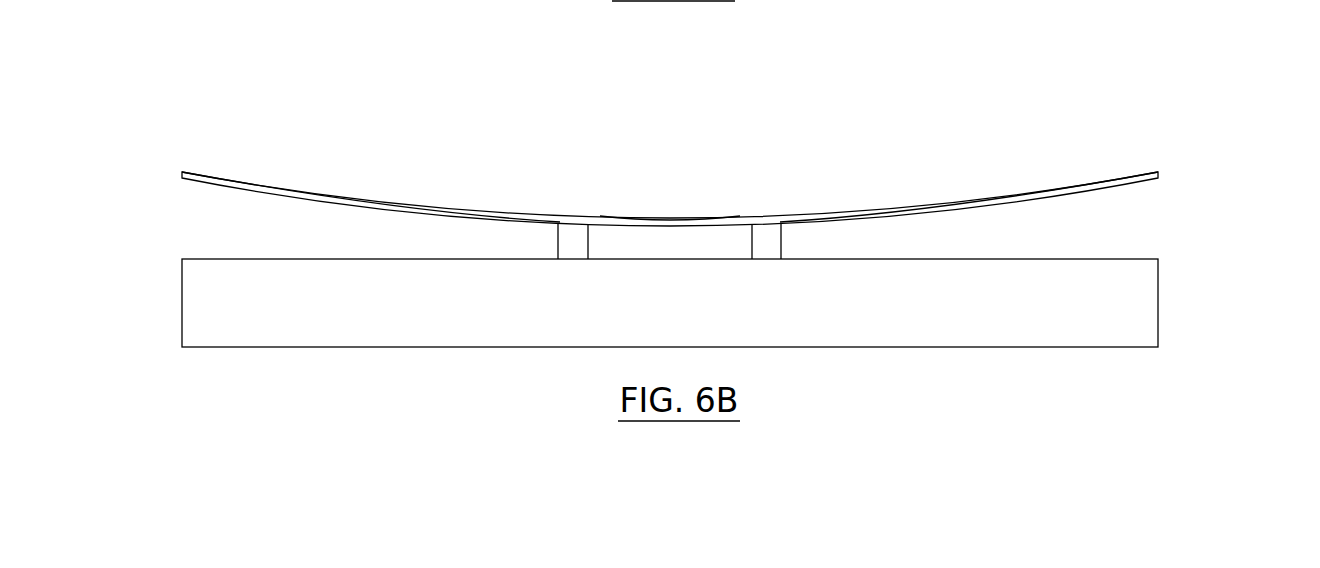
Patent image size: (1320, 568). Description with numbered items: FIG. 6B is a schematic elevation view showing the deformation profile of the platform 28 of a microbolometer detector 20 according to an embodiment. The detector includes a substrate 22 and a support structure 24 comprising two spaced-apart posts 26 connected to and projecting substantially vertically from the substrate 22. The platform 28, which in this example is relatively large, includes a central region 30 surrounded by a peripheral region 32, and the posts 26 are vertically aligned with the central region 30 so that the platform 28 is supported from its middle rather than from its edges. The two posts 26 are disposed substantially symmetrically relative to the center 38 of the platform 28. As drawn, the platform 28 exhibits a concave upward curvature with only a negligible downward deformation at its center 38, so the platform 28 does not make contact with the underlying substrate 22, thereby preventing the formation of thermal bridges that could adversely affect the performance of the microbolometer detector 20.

The microbolometer detector 20 is at (1186, 67).
The substrate 22 is at (1170, 299).
The support structure 24 is at (404, 238).
The post 26 is at (547, 239).
The platform 28 is at (1116, 170).
The central region 30 is at (753, 133).
The peripheral region 32 is at (223, 151).
The center 38 is at (674, 207).